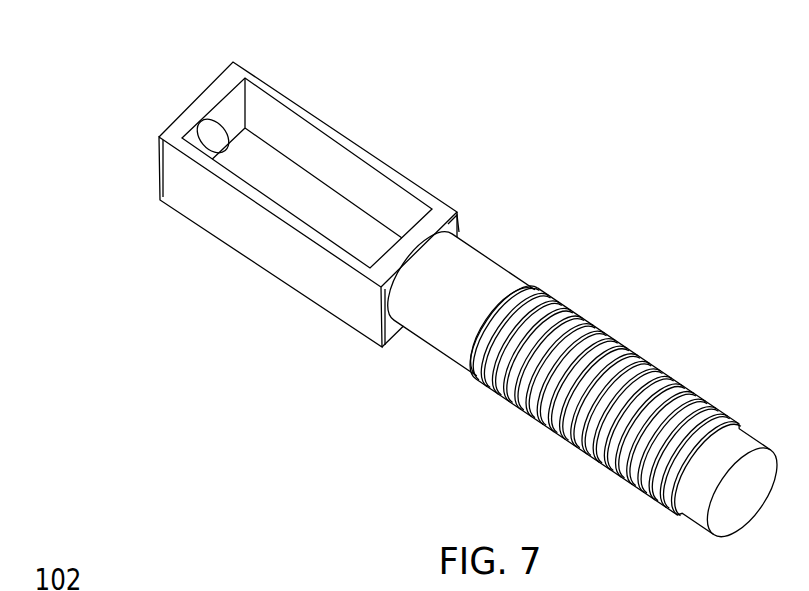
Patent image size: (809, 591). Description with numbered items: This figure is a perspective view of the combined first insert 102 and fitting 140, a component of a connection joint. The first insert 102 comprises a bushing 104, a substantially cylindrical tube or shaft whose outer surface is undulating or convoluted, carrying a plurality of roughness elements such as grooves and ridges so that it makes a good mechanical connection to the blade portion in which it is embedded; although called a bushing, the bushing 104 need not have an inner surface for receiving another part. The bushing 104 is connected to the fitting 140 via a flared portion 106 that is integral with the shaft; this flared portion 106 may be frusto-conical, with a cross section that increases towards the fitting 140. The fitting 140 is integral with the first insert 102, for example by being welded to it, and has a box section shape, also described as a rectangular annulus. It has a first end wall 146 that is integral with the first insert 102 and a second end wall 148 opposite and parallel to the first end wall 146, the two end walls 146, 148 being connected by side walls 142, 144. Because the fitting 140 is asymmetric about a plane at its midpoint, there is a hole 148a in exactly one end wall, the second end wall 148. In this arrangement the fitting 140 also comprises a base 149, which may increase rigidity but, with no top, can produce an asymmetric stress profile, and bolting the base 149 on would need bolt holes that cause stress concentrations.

The first insert 102 is at (566, 360).
The bushing 104 is at (652, 358).
The flared portion 106 is at (447, 350).
The fitting 140 is at (317, 190).
The side wall 142 is at (305, 270).
The side wall 144 is at (402, 177).
The first end wall 146 is at (458, 222).
The second end wall 148 is at (207, 88).
The hole 148a is at (212, 137).
The base 149 is at (310, 197).